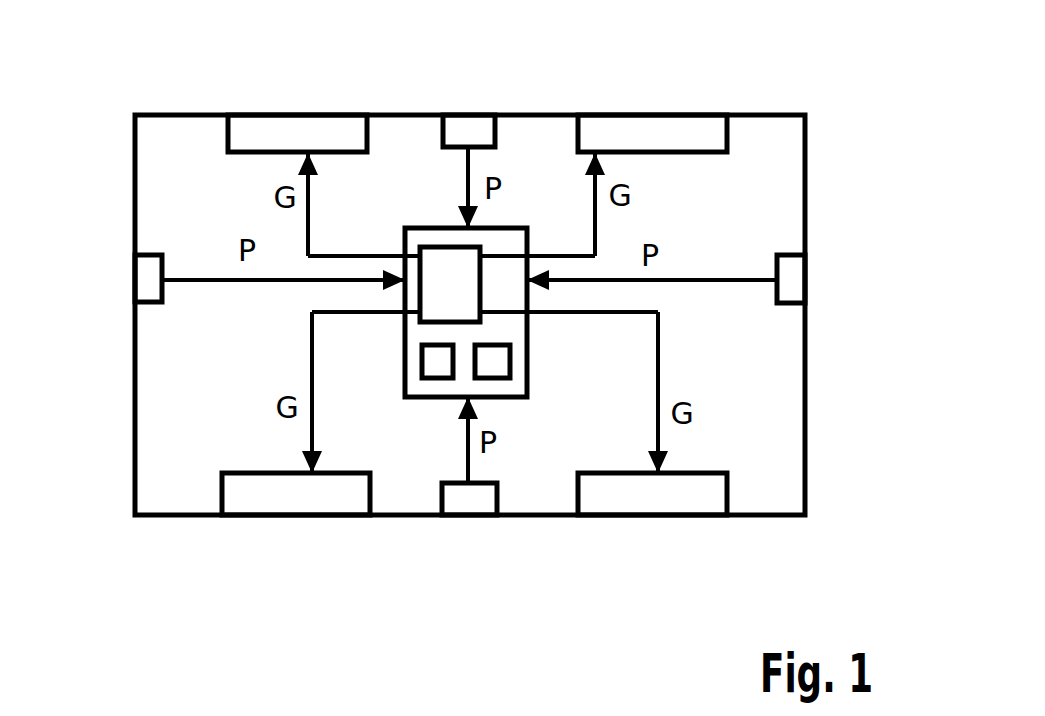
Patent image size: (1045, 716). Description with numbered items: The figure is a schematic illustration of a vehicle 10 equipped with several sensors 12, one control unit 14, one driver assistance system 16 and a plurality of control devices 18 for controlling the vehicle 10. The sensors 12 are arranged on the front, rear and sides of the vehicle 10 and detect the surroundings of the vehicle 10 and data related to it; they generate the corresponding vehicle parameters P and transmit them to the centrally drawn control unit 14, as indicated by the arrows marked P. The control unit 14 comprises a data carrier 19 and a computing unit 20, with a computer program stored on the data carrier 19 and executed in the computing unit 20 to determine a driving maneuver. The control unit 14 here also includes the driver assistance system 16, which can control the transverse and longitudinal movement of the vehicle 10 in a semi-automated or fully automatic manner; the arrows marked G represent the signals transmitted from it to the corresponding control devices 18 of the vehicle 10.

The vehicle 10 is at (826, 78).
The sensors 12 is at (468, 123).
The control unit 14 is at (510, 325).
The driver assistance system 16 is at (448, 275).
The control devices 18 is at (293, 130).
The data carrier 19 is at (493, 365).
The computing unit 20 is at (440, 365).